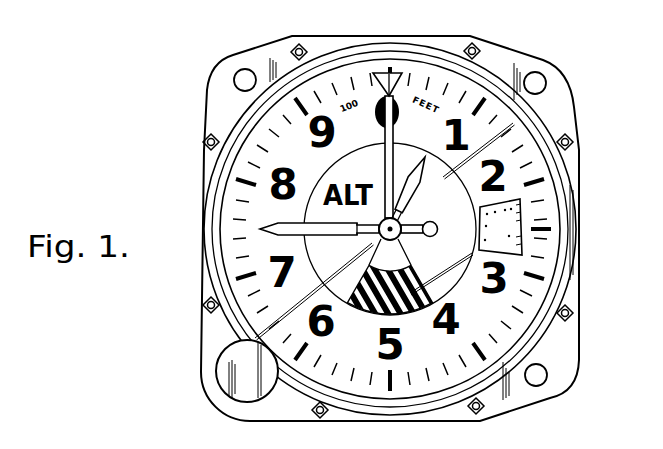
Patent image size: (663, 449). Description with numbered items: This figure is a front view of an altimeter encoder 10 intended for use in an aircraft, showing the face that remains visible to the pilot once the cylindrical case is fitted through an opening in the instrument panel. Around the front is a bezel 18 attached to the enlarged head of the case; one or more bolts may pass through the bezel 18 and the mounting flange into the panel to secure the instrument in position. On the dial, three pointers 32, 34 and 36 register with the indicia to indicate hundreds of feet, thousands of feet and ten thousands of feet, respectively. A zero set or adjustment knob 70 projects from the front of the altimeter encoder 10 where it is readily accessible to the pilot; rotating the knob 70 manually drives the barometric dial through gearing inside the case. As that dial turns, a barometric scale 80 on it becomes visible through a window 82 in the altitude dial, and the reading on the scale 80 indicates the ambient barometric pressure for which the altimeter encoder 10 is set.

The altimeter encoder 10 is at (590, 275).
The bezel 18 is at (245, 68).
The pointer 32 is at (304, 232).
The pointer 34 is at (404, 157).
The pointer 36 is at (388, 72).
The zero set or adjustment knob 70 is at (226, 386).
The barometric scale 80 is at (512, 222).
The window 82 is at (478, 226).